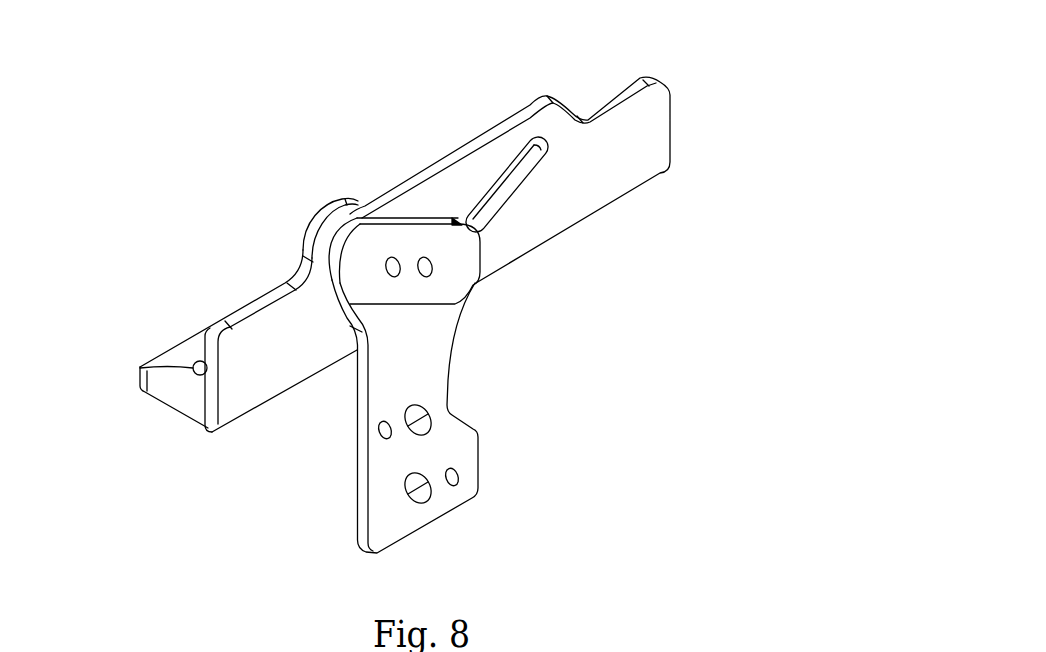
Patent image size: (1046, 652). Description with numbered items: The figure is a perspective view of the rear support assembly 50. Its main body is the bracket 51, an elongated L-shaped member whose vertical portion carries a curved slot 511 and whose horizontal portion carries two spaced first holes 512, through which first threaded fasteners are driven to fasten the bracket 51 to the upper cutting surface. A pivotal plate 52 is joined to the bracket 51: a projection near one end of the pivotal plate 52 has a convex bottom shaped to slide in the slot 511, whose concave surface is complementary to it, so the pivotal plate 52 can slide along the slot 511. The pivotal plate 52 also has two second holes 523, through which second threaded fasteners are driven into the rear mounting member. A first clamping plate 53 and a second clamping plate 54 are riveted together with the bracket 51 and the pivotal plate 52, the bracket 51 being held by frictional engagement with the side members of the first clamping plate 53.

The rear support assembly 50 is at (277, 173).
The bracket 51 is at (643, 138).
The curved slot 511 is at (515, 178).
The first holes 512 is at (140, 367).
The pivotal plate 52 is at (387, 463).
The second holes 523 is at (430, 420).
The first clamping plate 53 is at (303, 227).
The second clamping plate 54 is at (443, 275).